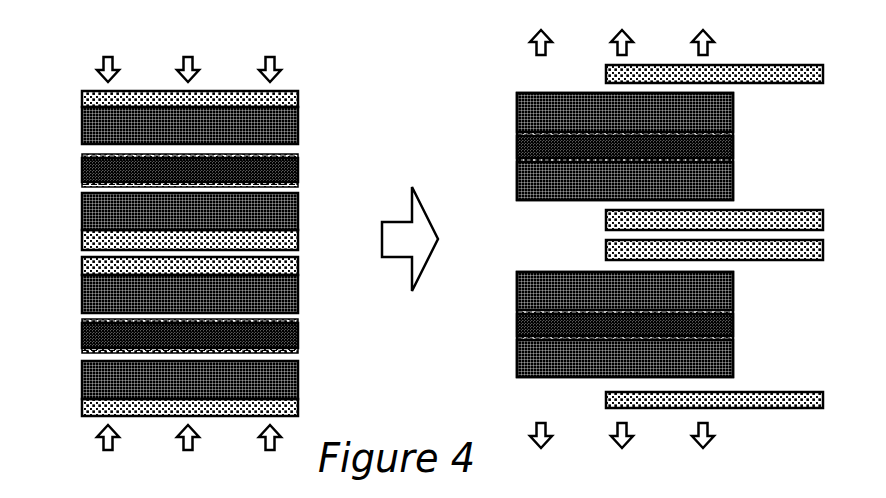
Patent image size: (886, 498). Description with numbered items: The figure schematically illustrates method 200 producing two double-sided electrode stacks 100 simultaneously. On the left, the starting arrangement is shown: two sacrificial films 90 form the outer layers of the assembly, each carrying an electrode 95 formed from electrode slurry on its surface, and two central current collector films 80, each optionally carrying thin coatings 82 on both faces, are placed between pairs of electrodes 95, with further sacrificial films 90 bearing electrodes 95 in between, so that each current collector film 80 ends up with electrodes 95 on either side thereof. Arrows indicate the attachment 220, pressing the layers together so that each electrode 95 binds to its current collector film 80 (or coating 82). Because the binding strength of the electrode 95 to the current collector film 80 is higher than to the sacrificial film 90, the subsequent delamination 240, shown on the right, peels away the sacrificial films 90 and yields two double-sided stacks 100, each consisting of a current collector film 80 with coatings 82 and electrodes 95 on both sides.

The current collector film 80 is at (82, 168).
The coating 82 is at (298, 156).
The sacrificial film 90 is at (82, 94).
The electrode 95 is at (82, 130).
The electrode stack 100 is at (501, 83).
The method 200 is at (69, 29).
The attachment 220 is at (104, 452).
The delamination 240 is at (712, 438).